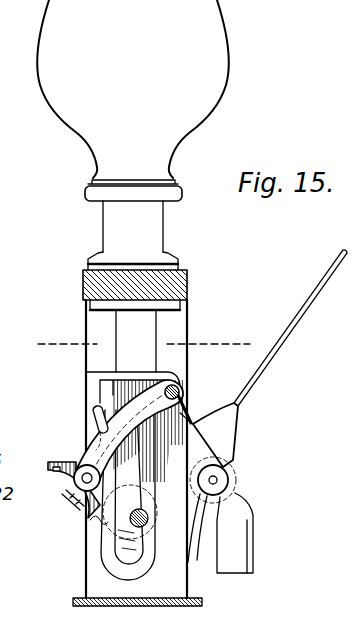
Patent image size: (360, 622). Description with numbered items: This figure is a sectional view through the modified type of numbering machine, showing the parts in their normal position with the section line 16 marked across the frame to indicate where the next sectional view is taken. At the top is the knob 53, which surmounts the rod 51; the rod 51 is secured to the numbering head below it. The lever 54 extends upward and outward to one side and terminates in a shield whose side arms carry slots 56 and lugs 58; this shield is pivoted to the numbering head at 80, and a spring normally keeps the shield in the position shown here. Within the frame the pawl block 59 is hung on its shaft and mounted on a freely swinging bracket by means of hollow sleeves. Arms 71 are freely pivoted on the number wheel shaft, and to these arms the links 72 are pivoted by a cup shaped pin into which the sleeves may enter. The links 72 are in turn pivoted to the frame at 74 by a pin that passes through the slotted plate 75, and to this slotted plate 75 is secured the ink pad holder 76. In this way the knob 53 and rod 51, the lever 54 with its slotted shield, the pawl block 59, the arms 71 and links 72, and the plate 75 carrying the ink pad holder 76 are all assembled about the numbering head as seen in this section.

The knob 53 is at (60, 25).
The rod 51 is at (137, 357).
The section line 16- 16 is at (144, 333).
The lever 54 is at (270, 364).
The pivot pin 74 is at (180, 393).
The slots 56 is at (87, 418).
The links 72 is at (90, 441).
The pawl block 59 is at (67, 490).
The arms 71 is at (95, 516).
The lugs 58 is at (143, 574).
The slotted plate 75 is at (198, 478).
The shield pivot 80 is at (196, 540).
The ink pad holder 76 is at (253, 557).